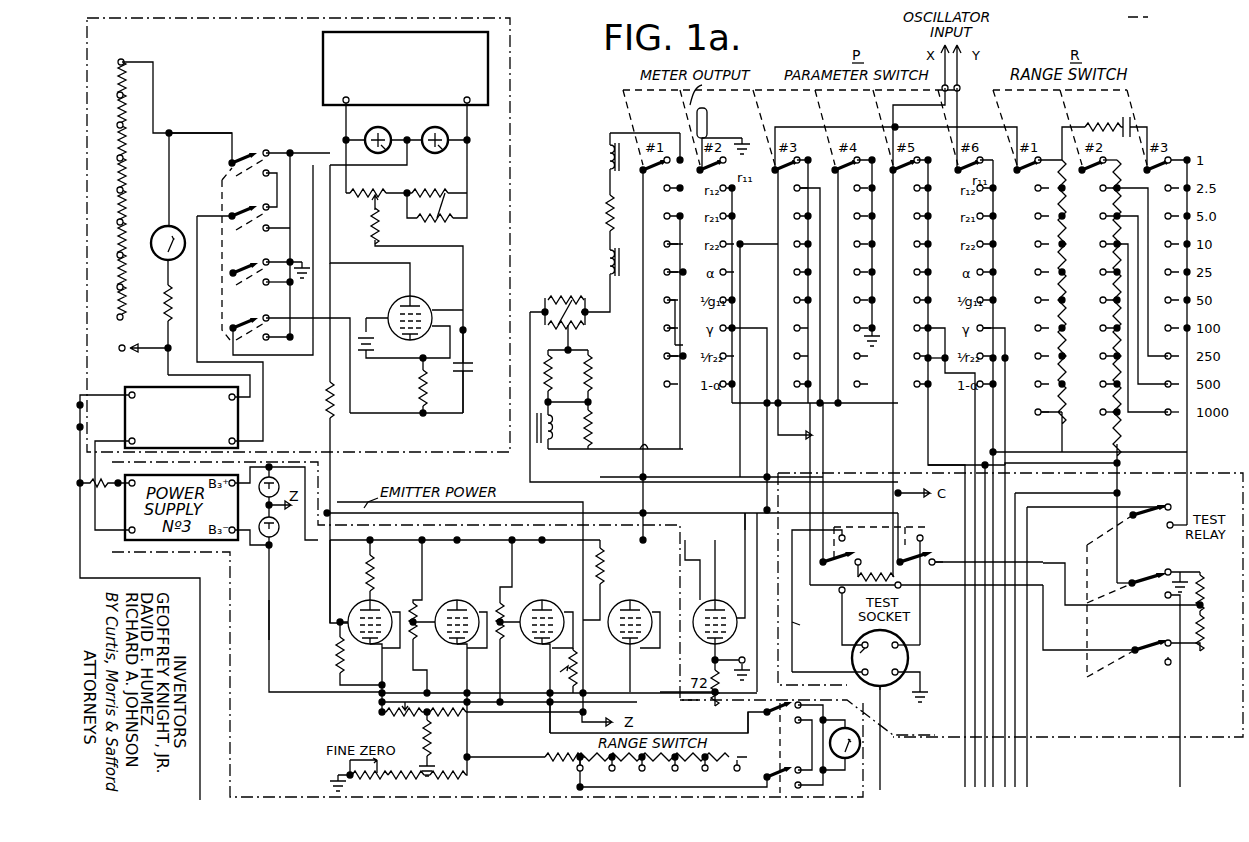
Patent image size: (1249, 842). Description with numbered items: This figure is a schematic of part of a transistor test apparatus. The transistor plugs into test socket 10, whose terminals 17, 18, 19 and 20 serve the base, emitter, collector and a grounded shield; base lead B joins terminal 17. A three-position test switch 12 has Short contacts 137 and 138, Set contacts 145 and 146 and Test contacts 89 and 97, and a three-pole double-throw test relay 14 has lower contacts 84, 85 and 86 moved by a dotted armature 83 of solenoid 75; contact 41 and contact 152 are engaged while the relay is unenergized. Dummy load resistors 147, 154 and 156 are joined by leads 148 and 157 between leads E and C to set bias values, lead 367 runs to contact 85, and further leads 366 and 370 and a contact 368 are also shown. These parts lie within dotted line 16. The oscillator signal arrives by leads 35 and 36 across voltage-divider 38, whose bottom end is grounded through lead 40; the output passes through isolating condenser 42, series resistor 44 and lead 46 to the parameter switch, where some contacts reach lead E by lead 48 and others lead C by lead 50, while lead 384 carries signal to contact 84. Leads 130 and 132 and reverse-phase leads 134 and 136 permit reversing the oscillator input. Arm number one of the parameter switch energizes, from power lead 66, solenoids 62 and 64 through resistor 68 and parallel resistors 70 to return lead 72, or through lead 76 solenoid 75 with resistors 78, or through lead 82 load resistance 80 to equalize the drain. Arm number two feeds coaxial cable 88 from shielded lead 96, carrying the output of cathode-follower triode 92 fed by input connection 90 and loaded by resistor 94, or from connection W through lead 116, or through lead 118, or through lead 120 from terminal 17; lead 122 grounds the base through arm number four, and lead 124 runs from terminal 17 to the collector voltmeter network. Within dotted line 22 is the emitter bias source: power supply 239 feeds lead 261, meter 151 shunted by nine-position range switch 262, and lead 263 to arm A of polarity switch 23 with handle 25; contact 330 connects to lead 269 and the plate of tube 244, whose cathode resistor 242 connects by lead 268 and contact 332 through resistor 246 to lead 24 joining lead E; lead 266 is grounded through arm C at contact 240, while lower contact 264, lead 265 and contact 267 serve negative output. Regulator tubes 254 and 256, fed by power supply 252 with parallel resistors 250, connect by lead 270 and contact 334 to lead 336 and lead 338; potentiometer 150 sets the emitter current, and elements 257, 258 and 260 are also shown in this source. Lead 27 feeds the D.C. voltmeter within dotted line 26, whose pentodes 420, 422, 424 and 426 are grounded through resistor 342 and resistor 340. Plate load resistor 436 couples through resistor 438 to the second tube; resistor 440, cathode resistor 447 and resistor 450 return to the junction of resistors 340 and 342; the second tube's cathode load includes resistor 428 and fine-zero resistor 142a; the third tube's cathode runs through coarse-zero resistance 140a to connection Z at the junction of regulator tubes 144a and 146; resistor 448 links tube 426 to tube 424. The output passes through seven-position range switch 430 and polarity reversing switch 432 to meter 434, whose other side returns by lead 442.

The D.C. current source and meter 22 is at (539, 59).
The D.C. voltmeter 26 is at (310, 492).
The test circuit dotted line 16 is at (1220, 471).
The seven-position range switch 430 is at (664, 725).
The nine-position range switch 262 is at (162, 51).
The lead 263 is at (205, 122).
The meter 151 is at (152, 234).
The lead 261 is at (168, 375).
The Power Supply No. 1 239 is at (120, 377).
The lead 266 is at (266, 415).
The voltage regulator tube 144a is at (276, 506).
The voltage regulator tube 146 is at (271, 541).
The return lead 72 is at (268, 594).
The handle 25 is at (220, 191).
The four-pole double-throw switch 23 is at (250, 127).
The switch contact 330 is at (254, 150).
The lead 265 is at (268, 190).
The switch contact 332 is at (268, 205).
The grounded switch contact 240 is at (266, 262).
The lead 270 is at (318, 278).
The switch contact 267 is at (267, 292).
The switch contact 334 is at (268, 312).
The lower contact 264 is at (290, 148).
The Power Supply No. 2 252 is at (318, 50).
The voltage regulator tube 254 is at (375, 129).
The voltage regulator tube 256 is at (433, 129).
The Ie bias potentiometer 150 is at (377, 191).
The resistance 250 is at (437, 194).
The resistor 257 is at (372, 232).
The lead 269 is at (412, 266).
The tube 244 is at (422, 296).
The battery 260 is at (354, 312).
The cathode resistor 242 is at (422, 394).
The capacitor 258 is at (468, 358).
The lead 268 is at (408, 425).
The lead 336 is at (338, 432).
The resistor 246 is at (324, 391).
The lead 27 is at (328, 585).
The lead 24 is at (602, 511).
The plate load resistor 436 is at (374, 564).
The pentode 420 is at (374, 600).
The resistor 438 is at (418, 598).
The resistor 440 is at (416, 658).
The pentode 422 is at (458, 587).
The resistor 448 is at (500, 598).
The resistor 450 is at (502, 658).
The pentode 424 is at (552, 587).
The coarse zero variable resistance 140a is at (558, 680).
The pentode 426 is at (634, 600).
The power lead 66 is at (690, 548).
The cathode-follower triode 92 is at (706, 600).
The input connection 90 is at (746, 558).
The cathode load resistor 94 is at (713, 667).
The resistor 447 is at (396, 718).
The resistor 340 is at (442, 716).
The resistor 342 is at (426, 738).
The lead 338 is at (534, 712).
The fine zero resistor 142a is at (394, 777).
The resistor 428 is at (448, 777).
The polarity reversing switch 432 is at (803, 702).
The lead 442 is at (754, 729).
The meter 434 is at (920, 752).
The lead 124 is at (880, 778).
The solenoid 62 is at (606, 153).
The current limiting resistor 68 is at (606, 208).
The solenoid 64 is at (606, 263).
The current limiting resistors 70 is at (565, 312).
The current limiting resistors 78 is at (550, 378).
The test relay operating solenoid 75 is at (551, 432).
The load resistance 80 is at (589, 430).
The lead 82 is at (676, 443).
The lead 76 is at (670, 460).
The coaxial cable 88 is at (710, 120).
The lead 118 is at (740, 272).
The lead 116 is at (776, 244).
The lead 50 is at (900, 420).
The lead 46 is at (982, 120).
The connection W is at (795, 421).
The shielded lead 96 is at (764, 457).
The lead 48 is at (826, 443).
The lead 120 is at (824, 461).
The lead 122 is at (836, 430).
The lead 384 is at (1061, 289).
The series resistor 44 is at (1102, 122).
The isolating condenser 42 is at (1128, 118).
The resistance voltage-divider 38 is at (1134, 432).
The lead 36 is at (1064, 458).
The lead 132 is at (1005, 437).
The lead 136 is at (928, 420).
The lead 130 is at (975, 408).
The lead 134 is at (993, 431).
The conductor 366 is at (1078, 494).
The lead 35 is at (1014, 488).
The conductor 370 is at (1054, 512).
The lead 40 is at (1117, 483).
The test relay 14 is at (1214, 555).
The lower contact 84 is at (1153, 521).
The relay contact 368 is at (1162, 525).
The armature 83 is at (1084, 549).
The contact 41 is at (1168, 566).
The dummy load resistor 147 is at (1204, 582).
The lower contact 85 is at (1164, 597).
The dummy load resistor 156 is at (1204, 624).
The contact 152 is at (1166, 636).
The lower contact 86 is at (1166, 665).
The lead 148 is at (1064, 608).
The lead 157 is at (1066, 652).
The lead 367 is at (1183, 694).
The contact 97 is at (926, 589).
The test switch 12 is at (892, 519).
The contact 137 is at (846, 538).
The contact 138 is at (921, 538).
The contact 145 is at (862, 570).
The dummy load resistor 154 is at (885, 570).
The contact 89 is at (838, 590).
The base lead B is at (802, 623).
The emitter socket terminal 18 is at (840, 650).
The base terminal 17 is at (844, 666).
The collector socket terminal 19 is at (910, 648).
The socket terminal 20 is at (912, 675).
The test socket 10 is at (918, 663).